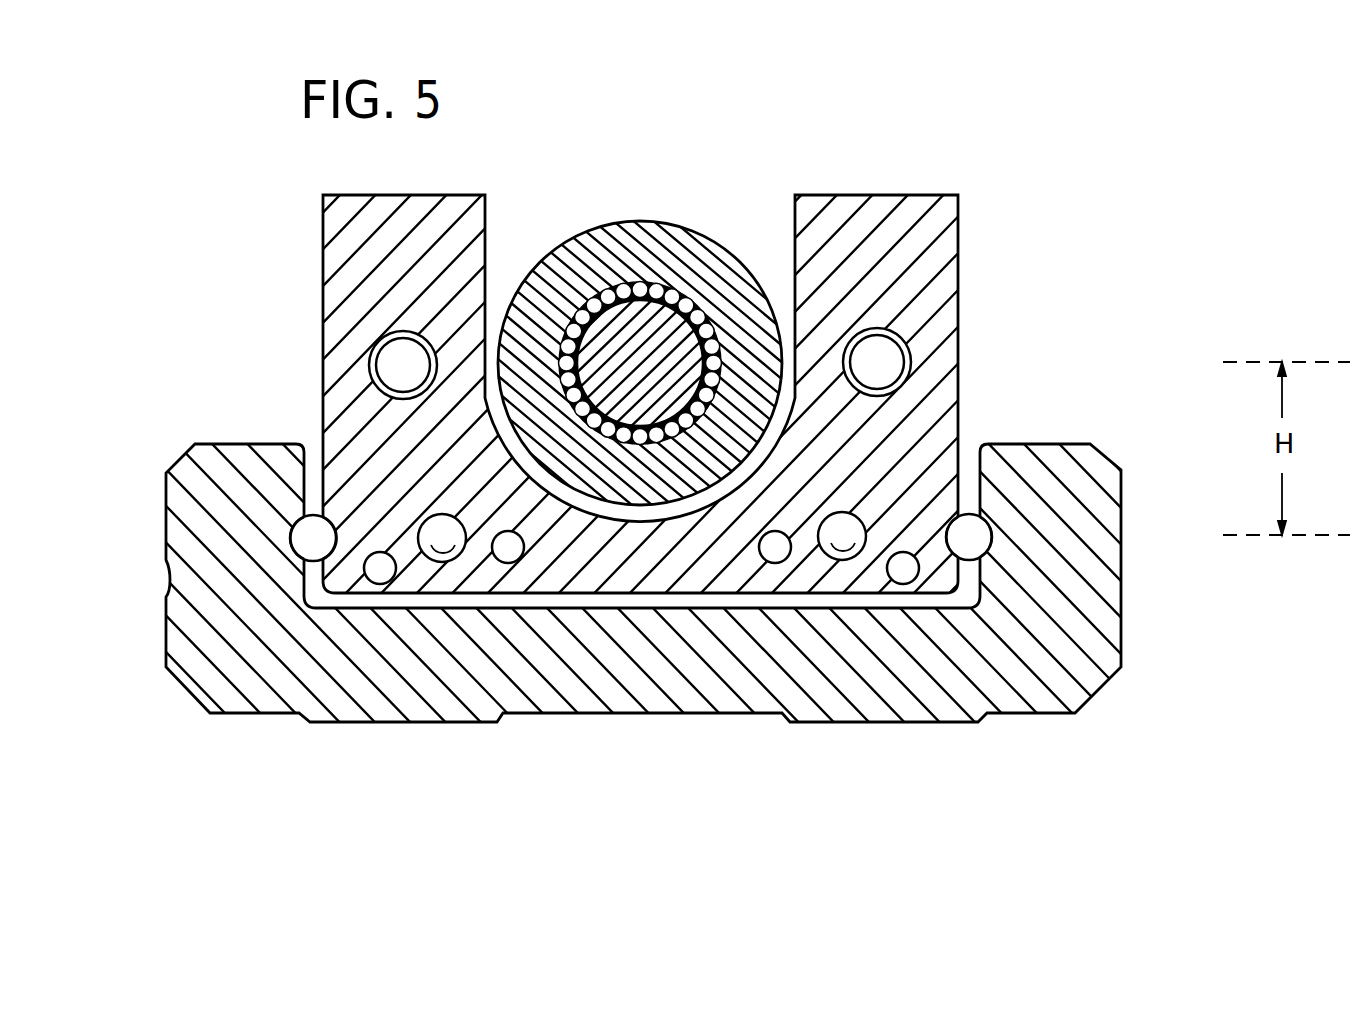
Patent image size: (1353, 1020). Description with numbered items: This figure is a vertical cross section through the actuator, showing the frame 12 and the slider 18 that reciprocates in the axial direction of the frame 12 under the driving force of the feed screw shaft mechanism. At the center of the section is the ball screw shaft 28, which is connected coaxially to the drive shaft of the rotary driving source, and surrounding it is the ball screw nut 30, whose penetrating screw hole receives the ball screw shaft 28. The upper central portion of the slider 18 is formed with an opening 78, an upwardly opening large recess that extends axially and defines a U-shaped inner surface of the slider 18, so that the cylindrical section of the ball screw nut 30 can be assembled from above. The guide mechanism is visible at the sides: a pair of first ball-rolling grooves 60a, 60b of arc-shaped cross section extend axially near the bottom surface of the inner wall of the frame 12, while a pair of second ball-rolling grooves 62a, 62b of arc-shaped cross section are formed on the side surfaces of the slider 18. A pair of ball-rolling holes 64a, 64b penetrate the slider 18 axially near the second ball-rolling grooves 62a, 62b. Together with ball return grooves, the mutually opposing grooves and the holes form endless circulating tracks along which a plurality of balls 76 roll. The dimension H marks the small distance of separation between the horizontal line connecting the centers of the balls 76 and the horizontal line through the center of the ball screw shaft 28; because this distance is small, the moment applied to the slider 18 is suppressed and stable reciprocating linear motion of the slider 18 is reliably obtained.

The frame 12 is at (1124, 512).
The slider 18 is at (963, 267).
The ball screw shaft 28 is at (650, 375).
The ball screw nut 30 is at (585, 282).
The first ball-rolling groove 60a is at (292, 556).
The first ball-rolling groove 60b is at (990, 550).
The second ball-rolling groove 62a is at (332, 545).
The second ball-rolling groove 62b is at (973, 543).
The ball-rolling hole 64a is at (446, 556).
The ball-rolling hole 64b is at (840, 553).
The balls 76 is at (311, 550).
The opening 78 is at (783, 362).